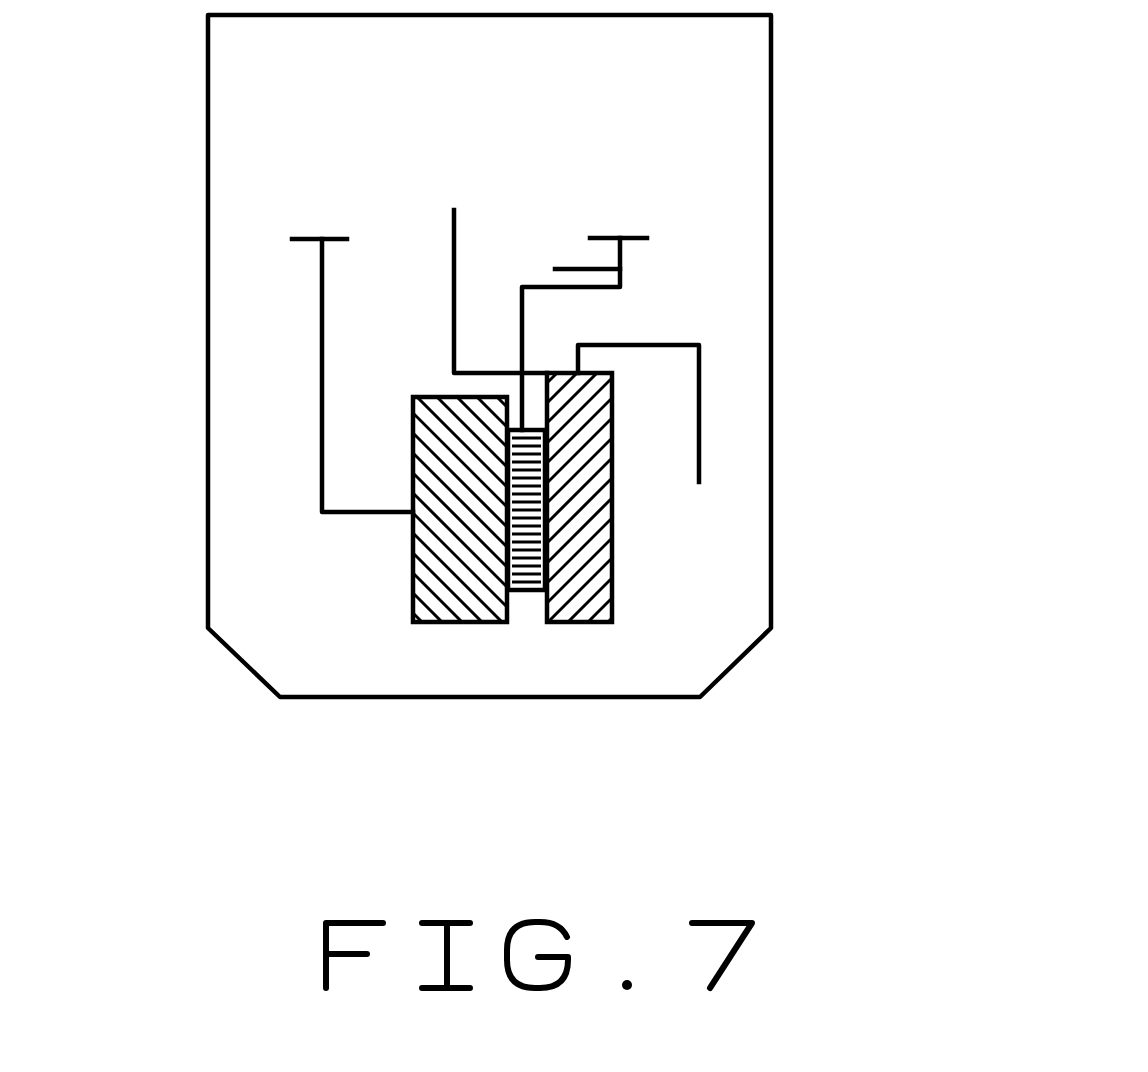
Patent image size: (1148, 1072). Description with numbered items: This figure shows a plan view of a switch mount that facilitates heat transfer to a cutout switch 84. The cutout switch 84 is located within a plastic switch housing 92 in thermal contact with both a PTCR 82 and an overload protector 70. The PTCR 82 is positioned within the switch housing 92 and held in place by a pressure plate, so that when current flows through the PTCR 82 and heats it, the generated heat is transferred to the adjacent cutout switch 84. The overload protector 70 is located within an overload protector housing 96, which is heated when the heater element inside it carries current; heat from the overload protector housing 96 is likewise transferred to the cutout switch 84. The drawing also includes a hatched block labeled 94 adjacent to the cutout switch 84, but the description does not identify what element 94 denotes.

The switch housing 92 is at (772, 177).
The first block 94 is at (413, 553).
The overload protector housing 96 is at (613, 530).
The cutout switch 84 is at (533, 653).
The PTCR 82 is at (365, 613).
The overload protector 70 is at (662, 581).